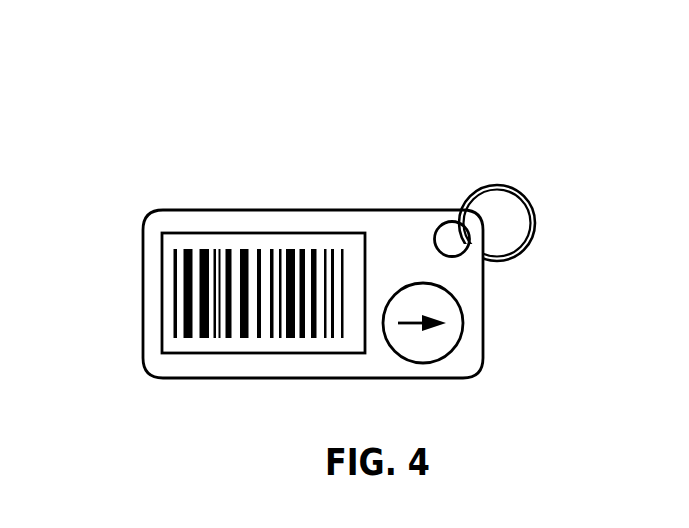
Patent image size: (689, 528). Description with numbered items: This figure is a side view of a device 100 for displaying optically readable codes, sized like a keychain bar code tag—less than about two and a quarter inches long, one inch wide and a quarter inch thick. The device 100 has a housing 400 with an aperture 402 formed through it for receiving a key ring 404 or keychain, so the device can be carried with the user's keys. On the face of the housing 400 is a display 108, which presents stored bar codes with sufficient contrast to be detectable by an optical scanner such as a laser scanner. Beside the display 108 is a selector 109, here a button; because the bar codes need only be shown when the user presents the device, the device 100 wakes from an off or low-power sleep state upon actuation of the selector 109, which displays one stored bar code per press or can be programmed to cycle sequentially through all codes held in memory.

The device 100 is at (173, 100).
The housing 400 is at (143, 267).
The aperture 402 is at (452, 221).
The key ring 404 is at (487, 185).
The display 108 is at (254, 234).
The selector 109 is at (445, 356).